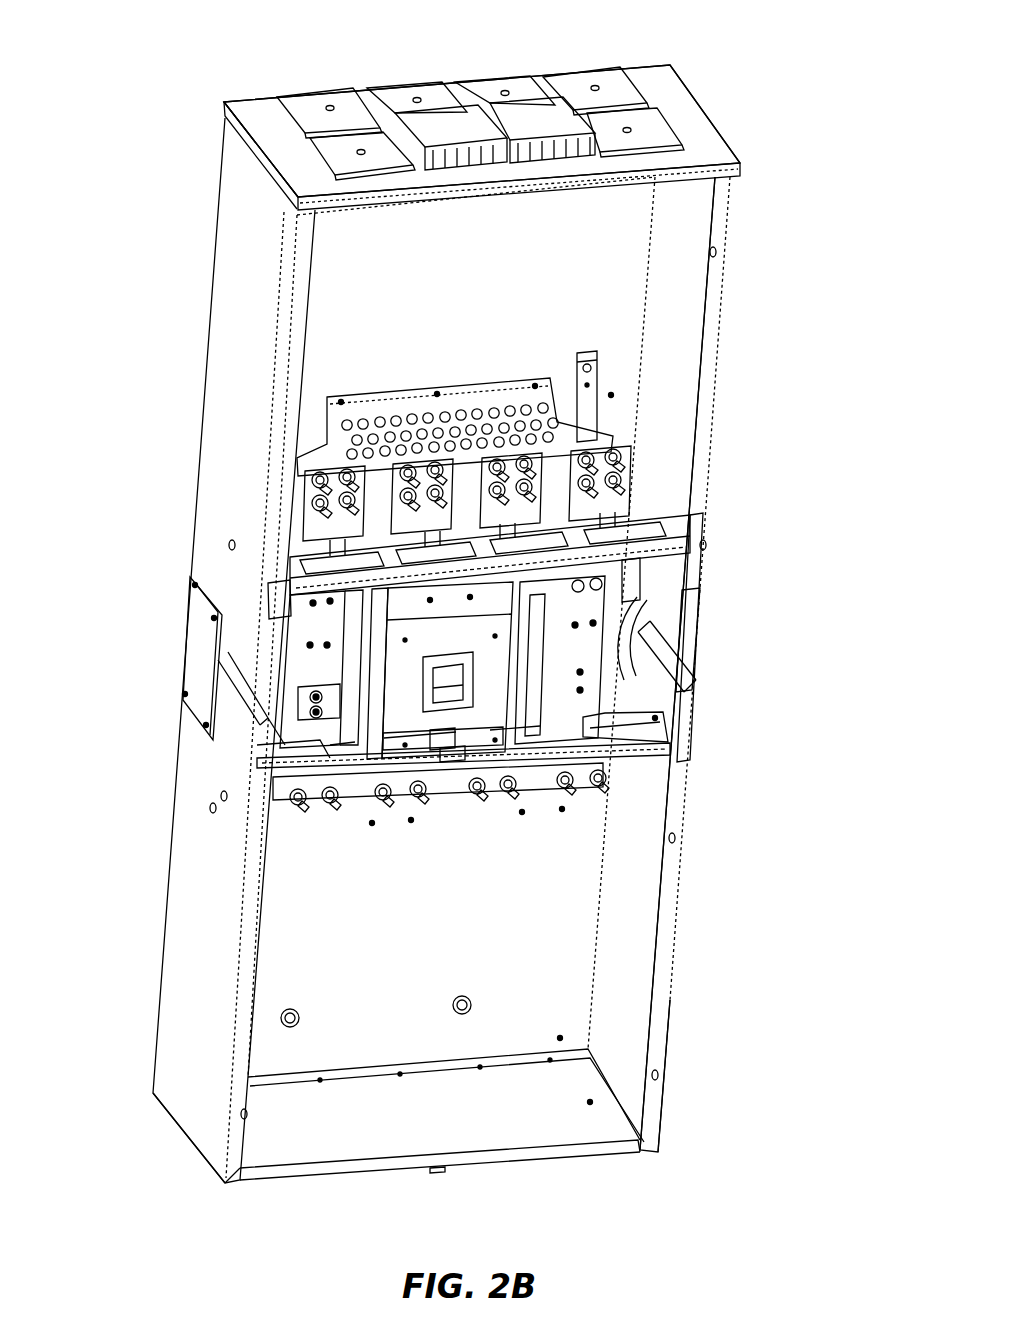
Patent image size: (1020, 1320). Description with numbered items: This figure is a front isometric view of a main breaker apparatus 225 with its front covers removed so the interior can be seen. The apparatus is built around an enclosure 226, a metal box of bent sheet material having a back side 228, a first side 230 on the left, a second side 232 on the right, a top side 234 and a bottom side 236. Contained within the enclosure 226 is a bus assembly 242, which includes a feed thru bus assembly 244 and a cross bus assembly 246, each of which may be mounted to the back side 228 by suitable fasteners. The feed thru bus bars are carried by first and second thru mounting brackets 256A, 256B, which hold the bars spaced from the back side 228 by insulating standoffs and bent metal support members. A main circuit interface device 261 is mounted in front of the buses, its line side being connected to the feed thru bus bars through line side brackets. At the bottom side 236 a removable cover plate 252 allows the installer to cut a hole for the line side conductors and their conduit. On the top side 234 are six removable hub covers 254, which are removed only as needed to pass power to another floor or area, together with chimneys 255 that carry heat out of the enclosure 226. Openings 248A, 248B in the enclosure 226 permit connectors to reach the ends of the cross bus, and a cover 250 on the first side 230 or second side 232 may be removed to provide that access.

The main breaker apparatus 225 is at (184, 84).
The enclosure 226 is at (722, 375).
The back side 228 is at (598, 243).
The first side 230 is at (232, 770).
The second side 232 is at (683, 808).
The top side 234 is at (655, 83).
The bottom side 236 is at (502, 1163).
The bus assembly 242 is at (431, 383).
The feed thru bus assembly 244 is at (505, 437).
The cross bus assembly 246 is at (626, 710).
The opening 248A is at (205, 680).
The opening 248B is at (676, 628).
The cover 250 is at (188, 630).
The cover plate 252 is at (363, 1137).
The removable hub cover 254 is at (318, 95).
The chimney 255 is at (425, 120).
The first thru mounting bracket 256A is at (348, 806).
The second thru mounting bracket 256B is at (365, 390).
The main circuit interface device 261 is at (462, 745).